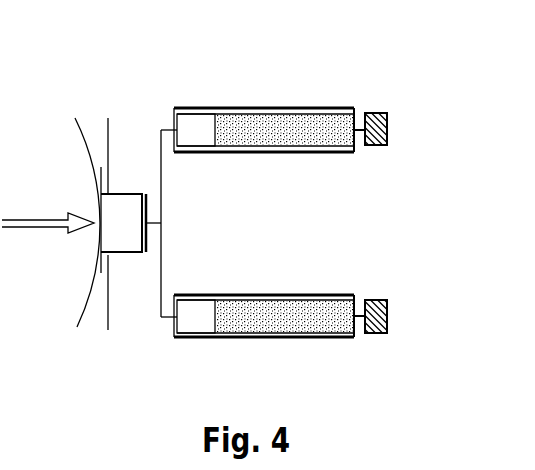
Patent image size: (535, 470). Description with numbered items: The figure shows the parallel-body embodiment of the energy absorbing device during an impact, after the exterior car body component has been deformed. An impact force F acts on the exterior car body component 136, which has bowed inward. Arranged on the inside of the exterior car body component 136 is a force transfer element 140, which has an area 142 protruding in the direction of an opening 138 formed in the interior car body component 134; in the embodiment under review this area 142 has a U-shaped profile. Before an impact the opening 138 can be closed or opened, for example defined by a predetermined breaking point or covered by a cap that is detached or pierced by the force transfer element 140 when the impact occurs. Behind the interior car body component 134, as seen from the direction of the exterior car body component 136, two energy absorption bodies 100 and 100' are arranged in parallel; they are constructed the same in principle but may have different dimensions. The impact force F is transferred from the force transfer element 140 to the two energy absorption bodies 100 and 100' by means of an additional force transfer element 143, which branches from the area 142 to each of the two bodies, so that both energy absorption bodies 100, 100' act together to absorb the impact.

The energy absorption body 100 is at (280, 87).
The energy absorption body 100' is at (280, 272).
The interior car body component 134 is at (107, 132).
The exterior car body component 136 is at (88, 146).
The opening 138 is at (114, 191).
The force transfer element 140 is at (100, 273).
The area 142 is at (120, 252).
The additional force transfer element 143 is at (160, 162).
The impact force F is at (48, 212).